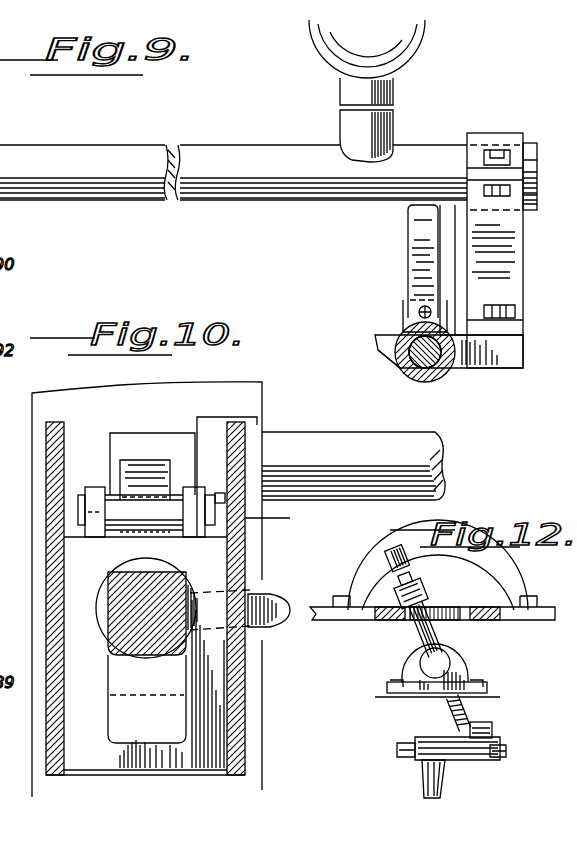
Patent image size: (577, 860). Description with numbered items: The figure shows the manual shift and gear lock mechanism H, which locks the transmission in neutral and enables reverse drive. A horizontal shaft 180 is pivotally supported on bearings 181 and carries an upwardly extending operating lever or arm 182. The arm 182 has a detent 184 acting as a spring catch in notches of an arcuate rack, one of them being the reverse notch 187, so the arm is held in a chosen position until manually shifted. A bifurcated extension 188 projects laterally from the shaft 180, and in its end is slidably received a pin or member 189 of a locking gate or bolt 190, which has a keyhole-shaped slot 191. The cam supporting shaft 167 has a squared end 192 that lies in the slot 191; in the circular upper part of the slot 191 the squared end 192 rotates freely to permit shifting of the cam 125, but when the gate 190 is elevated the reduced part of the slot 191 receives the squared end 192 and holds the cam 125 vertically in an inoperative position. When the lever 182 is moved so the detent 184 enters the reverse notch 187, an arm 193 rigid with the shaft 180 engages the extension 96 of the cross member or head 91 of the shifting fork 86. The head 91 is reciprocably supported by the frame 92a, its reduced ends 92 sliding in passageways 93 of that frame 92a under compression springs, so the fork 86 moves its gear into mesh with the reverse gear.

In FIG. 9, the operating lever or arm 182 is at (352, 97).
In FIG. 9, the shaft 180 is at (266, 210).
In FIG. 10, the shaft 180 is at (370, 444).
In FIG. 12, the shaft 180 is at (440, 662).
In FIG. 9, the manual shift and gear lock mechanism H is at (78, 153).
In FIG. 12, the manual shift and gear lock mechanism H is at (420, 634).
In FIG. 9, the arm 193 is at (410, 258).
In FIG. 12, the arm 193 is at (465, 712).
In FIG. 9, the bearings 181 is at (505, 284).
In FIG. 9, the extension 96 is at (403, 314).
In FIG. 12, the extension 96 is at (492, 728).
In FIG. 9, the reduced ends 92 is at (440, 370).
In FIG. 9, the passageways 93 is at (412, 370).
In FIG. 9, the frame 92a is at (396, 360).
In FIG. 10, the locking gate or bolt 190 is at (210, 700).
In FIG. 10, the bifurcated extension 188 is at (130, 480).
In FIG. 10, the pin or member 189 is at (113, 505).
In FIG. 10, the cam supporting shaft 167 is at (108, 600).
In FIG. 10, the slot 191 is at (108, 700).
In FIG. 10, the squared end 192 is at (200, 590).
In FIG. 10, the cam 125 is at (262, 606).
In FIG. 12, the detent 184 is at (433, 588).
In FIG. 12, the reverse notch 187 is at (385, 580).
In FIG. 12, the cross member or head 91 is at (463, 760).
In FIG. 12, the shifting fork 86 is at (425, 786).